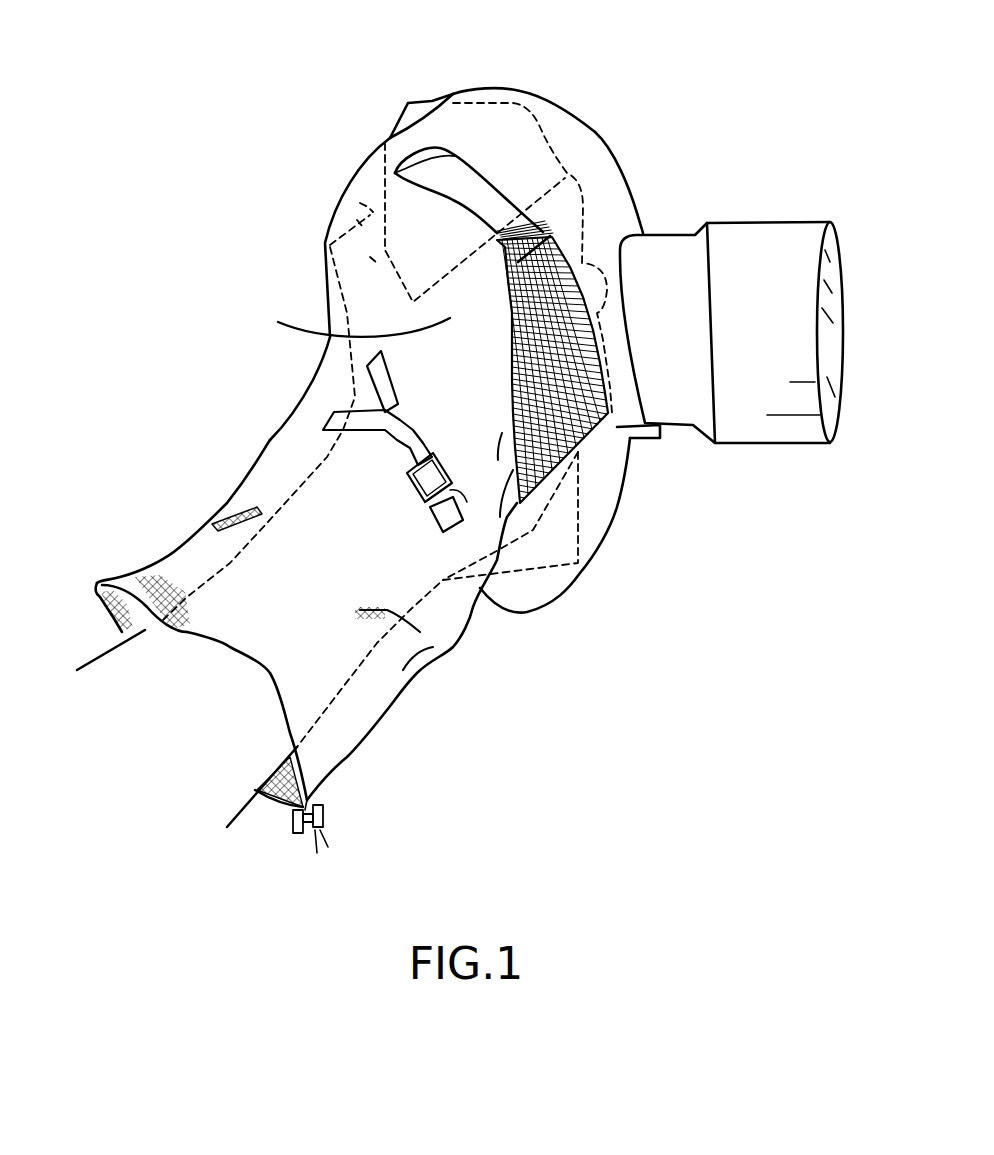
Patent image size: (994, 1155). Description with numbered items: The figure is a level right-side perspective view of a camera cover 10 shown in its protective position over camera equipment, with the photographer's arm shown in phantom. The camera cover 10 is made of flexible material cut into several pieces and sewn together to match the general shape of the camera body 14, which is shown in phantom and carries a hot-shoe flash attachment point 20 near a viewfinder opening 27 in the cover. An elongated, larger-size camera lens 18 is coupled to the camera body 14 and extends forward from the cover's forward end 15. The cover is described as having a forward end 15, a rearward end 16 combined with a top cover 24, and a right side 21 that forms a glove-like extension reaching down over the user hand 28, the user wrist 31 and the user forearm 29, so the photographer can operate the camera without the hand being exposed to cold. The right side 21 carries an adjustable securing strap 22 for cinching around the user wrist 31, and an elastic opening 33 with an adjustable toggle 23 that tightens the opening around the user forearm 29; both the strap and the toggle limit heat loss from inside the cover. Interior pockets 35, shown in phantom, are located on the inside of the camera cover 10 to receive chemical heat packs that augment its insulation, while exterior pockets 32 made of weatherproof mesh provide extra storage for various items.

The camera cover 10 is at (236, 126).
The camera body 14 is at (508, 103).
The forward end 15 is at (623, 497).
The rearward end 16 is at (323, 268).
The camera lens 18 is at (827, 278).
The flash attachment point 20 is at (390, 138).
The right side 21 is at (270, 473).
The securing strap 22 is at (373, 407).
The adjustable toggle 23 is at (297, 817).
The top cover 24 is at (577, 123).
The viewfinder opening 27 is at (390, 138).
The user hand 28 is at (345, 321).
The user forearm 29 is at (150, 713).
The user wrist 31 is at (337, 572).
The exterior pockets 32 is at (550, 393).
The elastic opening 33 is at (133, 615).
The interior pockets 35 is at (553, 232).